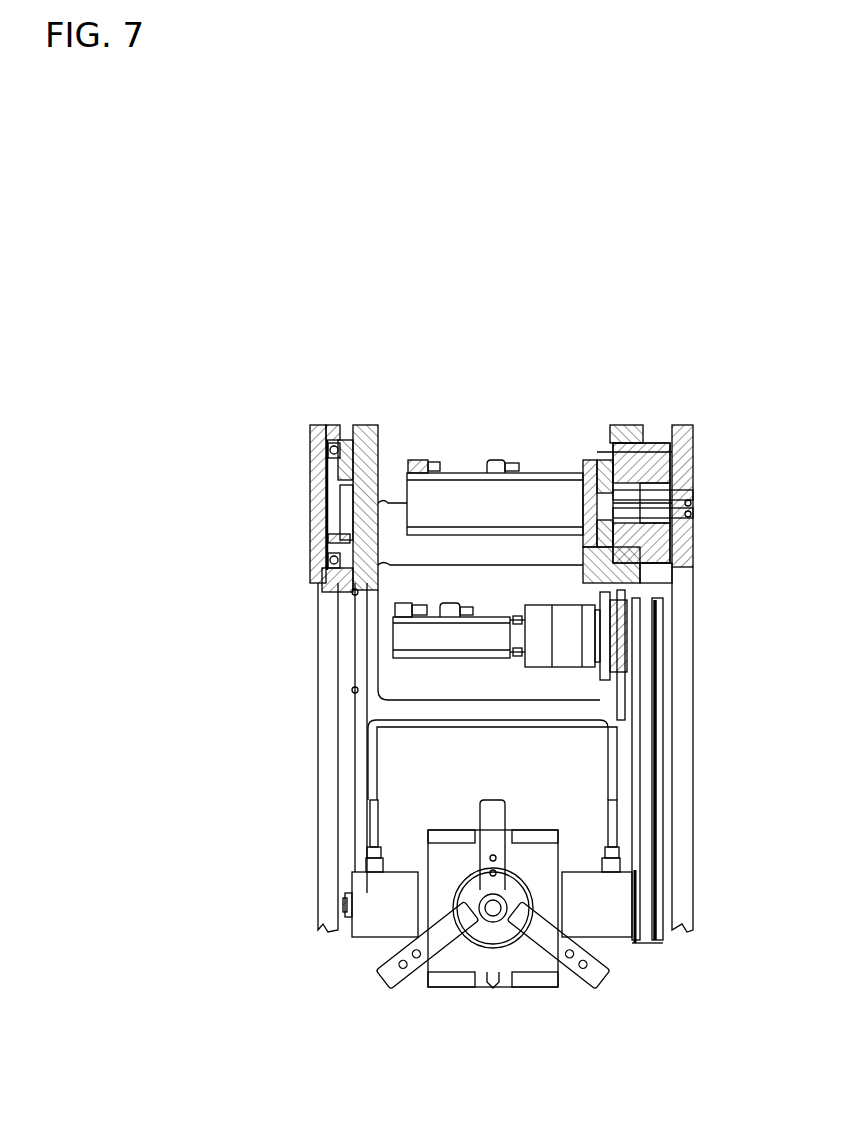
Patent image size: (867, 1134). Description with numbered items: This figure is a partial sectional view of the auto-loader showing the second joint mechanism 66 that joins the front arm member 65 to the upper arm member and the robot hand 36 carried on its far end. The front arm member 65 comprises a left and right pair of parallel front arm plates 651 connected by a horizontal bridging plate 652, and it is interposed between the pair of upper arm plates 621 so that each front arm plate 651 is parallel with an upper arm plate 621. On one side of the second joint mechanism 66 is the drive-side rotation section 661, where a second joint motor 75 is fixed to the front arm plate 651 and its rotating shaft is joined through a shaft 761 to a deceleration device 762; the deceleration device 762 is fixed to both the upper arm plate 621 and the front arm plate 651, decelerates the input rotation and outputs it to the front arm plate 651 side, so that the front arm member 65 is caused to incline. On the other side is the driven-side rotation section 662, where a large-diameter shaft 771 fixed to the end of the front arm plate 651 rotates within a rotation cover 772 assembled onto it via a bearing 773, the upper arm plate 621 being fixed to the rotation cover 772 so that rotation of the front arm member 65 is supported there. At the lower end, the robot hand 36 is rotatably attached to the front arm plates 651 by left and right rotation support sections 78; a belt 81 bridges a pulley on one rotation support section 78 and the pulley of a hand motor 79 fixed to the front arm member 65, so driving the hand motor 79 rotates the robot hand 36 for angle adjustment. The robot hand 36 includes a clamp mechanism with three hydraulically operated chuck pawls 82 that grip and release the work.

The robot hand 36 is at (497, 995).
The front arm member 65 is at (250, 645).
The second joint mechanism 66 is at (535, 335).
The second joint motor 75 is at (483, 497).
The rotation support section 78 is at (377, 928).
The hand motor 79 is at (482, 642).
The belt 81 is at (648, 760).
The chuck pawl 82 is at (418, 968).
The upper arm plate 621 is at (330, 874).
The front arm plate 651 is at (627, 758).
The bridging plate 652 is at (405, 553).
The drive-side rotation section 661 is at (533, 410).
The driven-side rotation section 662 is at (440, 402).
The shaft 761 is at (692, 511).
The deceleration device 762 is at (667, 530).
The shaft 771 is at (323, 465).
The rotation cover 772 is at (315, 505).
The bearing 773 is at (322, 566).